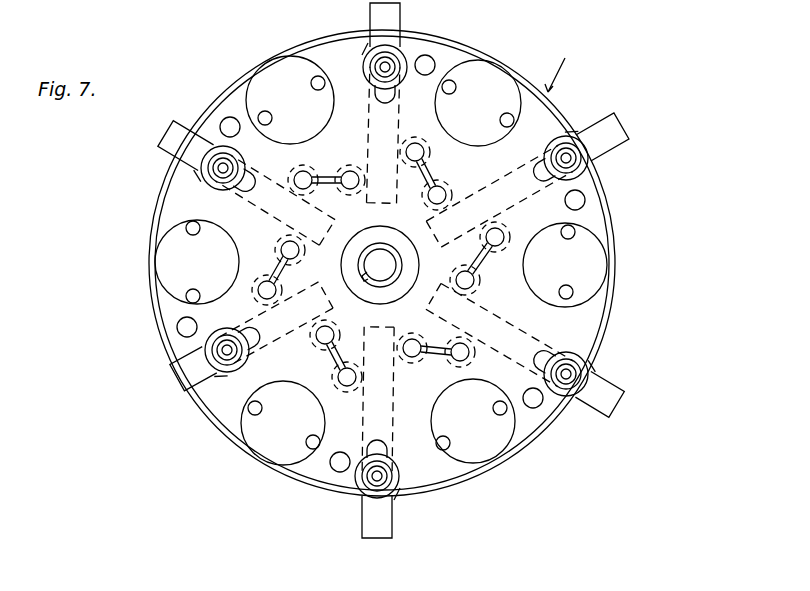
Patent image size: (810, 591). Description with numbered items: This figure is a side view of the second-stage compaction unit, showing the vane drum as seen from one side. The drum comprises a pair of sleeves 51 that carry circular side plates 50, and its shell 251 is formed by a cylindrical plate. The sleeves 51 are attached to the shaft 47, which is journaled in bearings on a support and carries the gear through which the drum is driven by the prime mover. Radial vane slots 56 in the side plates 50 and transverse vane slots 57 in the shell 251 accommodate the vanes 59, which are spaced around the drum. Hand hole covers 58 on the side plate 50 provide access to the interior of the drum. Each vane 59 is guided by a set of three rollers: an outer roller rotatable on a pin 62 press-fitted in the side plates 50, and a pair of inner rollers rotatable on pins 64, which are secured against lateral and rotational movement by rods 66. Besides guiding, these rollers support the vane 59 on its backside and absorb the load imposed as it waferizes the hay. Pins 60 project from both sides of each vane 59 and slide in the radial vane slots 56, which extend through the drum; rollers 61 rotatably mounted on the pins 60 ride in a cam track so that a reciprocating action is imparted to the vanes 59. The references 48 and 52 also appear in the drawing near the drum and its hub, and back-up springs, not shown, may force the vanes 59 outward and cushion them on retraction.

The shaft 47 is at (394, 265).
The indexing head 48 is at (564, 64).
The circular side plates 50 is at (540, 118).
The sleeves 51 is at (398, 242).
The keyway 52 is at (367, 283).
The radial vane slots 56 is at (397, 96).
The transverse vane slots 57 is at (370, 40).
The hand hole covers 58 is at (268, 88).
The vanes 59 is at (371, 15).
The pins 60 is at (392, 62).
The rollers 61 is at (370, 84).
The pin 62 is at (226, 118).
The pins 64 is at (440, 188).
The rods 66 is at (330, 172).
The shell 251 is at (612, 264).